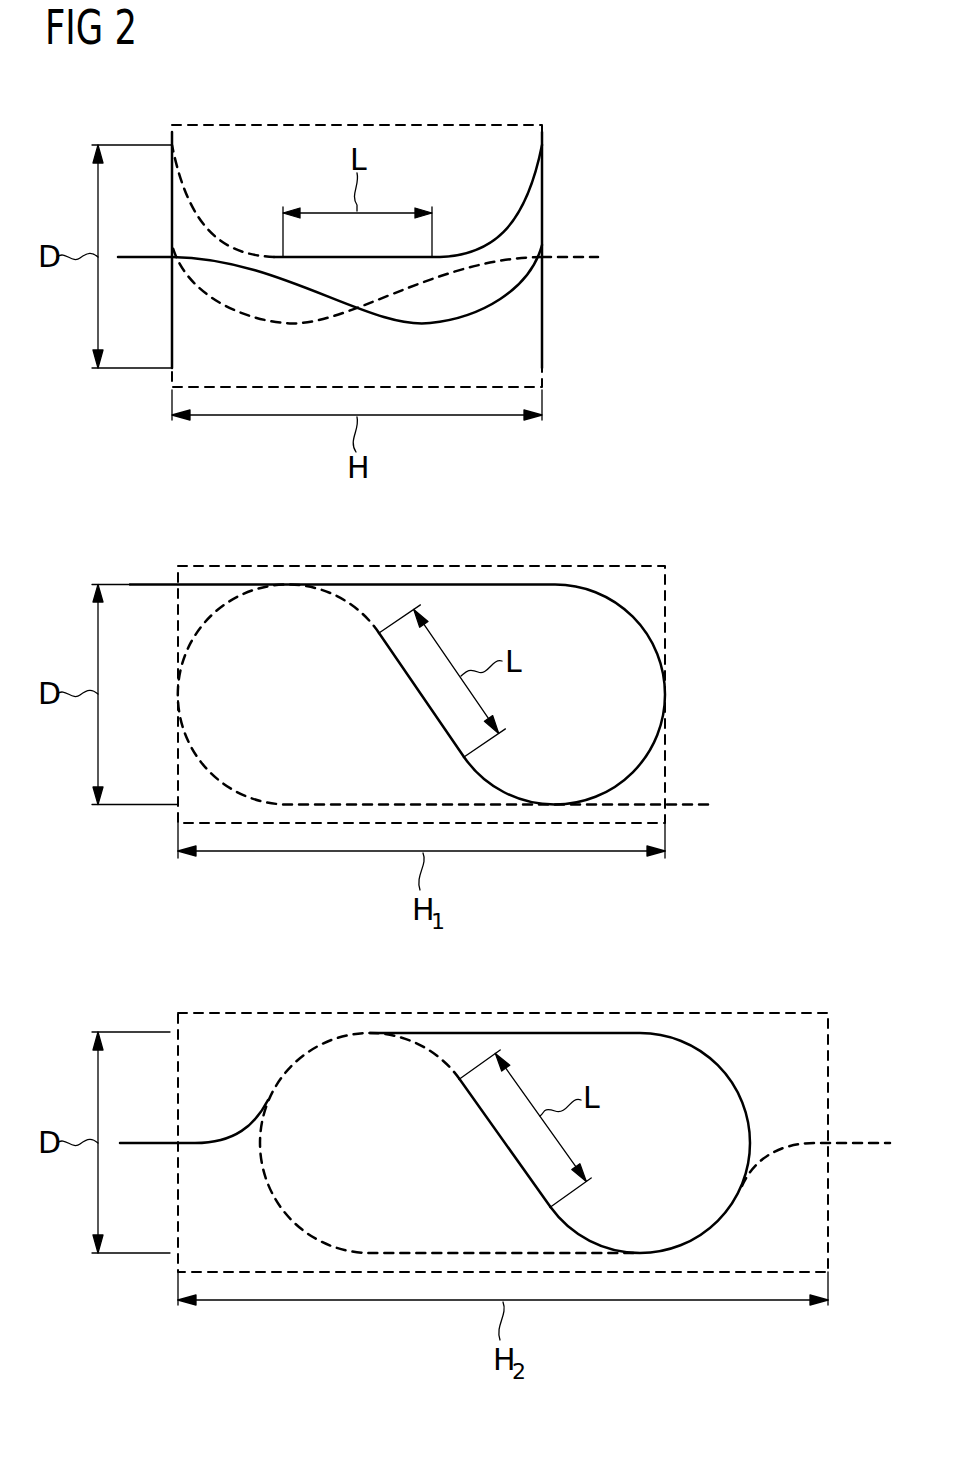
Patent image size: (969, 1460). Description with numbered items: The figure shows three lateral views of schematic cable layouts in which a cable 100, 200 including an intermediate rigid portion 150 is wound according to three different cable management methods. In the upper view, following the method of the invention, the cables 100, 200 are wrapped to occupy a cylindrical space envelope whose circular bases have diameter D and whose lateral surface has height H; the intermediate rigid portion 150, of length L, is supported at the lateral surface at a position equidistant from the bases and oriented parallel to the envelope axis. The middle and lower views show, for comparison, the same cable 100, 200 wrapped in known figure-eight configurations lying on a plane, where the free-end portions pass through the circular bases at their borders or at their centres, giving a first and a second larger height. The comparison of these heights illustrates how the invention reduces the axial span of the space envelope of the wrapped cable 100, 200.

The cable 100 is at (137, 240).
The intermediate rigid portion 150 is at (378, 259).
The cable 200 is at (572, 240).